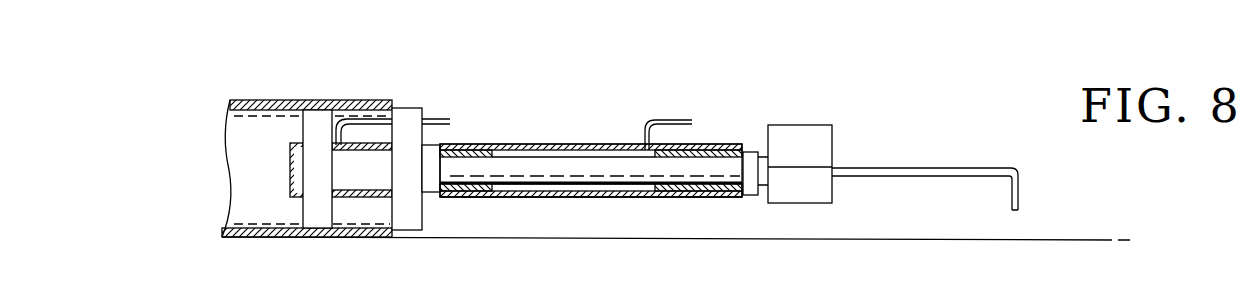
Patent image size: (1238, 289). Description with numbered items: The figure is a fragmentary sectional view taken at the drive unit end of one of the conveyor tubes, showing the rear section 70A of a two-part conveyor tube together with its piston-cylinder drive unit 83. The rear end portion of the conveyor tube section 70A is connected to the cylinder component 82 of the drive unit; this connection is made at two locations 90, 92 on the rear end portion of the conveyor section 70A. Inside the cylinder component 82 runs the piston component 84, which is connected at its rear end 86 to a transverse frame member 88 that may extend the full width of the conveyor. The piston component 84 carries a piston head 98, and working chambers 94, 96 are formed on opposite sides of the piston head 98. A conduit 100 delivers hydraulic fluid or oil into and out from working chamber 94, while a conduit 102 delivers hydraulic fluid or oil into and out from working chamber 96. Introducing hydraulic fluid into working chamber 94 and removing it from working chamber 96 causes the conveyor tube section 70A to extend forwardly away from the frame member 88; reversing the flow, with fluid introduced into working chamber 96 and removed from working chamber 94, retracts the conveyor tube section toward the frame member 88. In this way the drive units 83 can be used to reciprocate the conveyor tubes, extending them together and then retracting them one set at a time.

The rear section of conveyor tube 70A is at (257, 100).
The cylinder component 82 is at (510, 143).
The drive unit 83 is at (598, 204).
The piston component 84 is at (541, 178).
The rear end of piston component 86 is at (793, 133).
The transverse frame member 88 is at (892, 168).
The connection of cylinder component to conveyor section 90 is at (313, 222).
The connection of cylinder component to conveyor section 92 is at (408, 222).
The working chamber 94 is at (365, 178).
The working chamber 96 is at (568, 148).
The piston head 98 is at (460, 198).
The conduit 100 is at (433, 116).
The conduit 102 is at (672, 120).